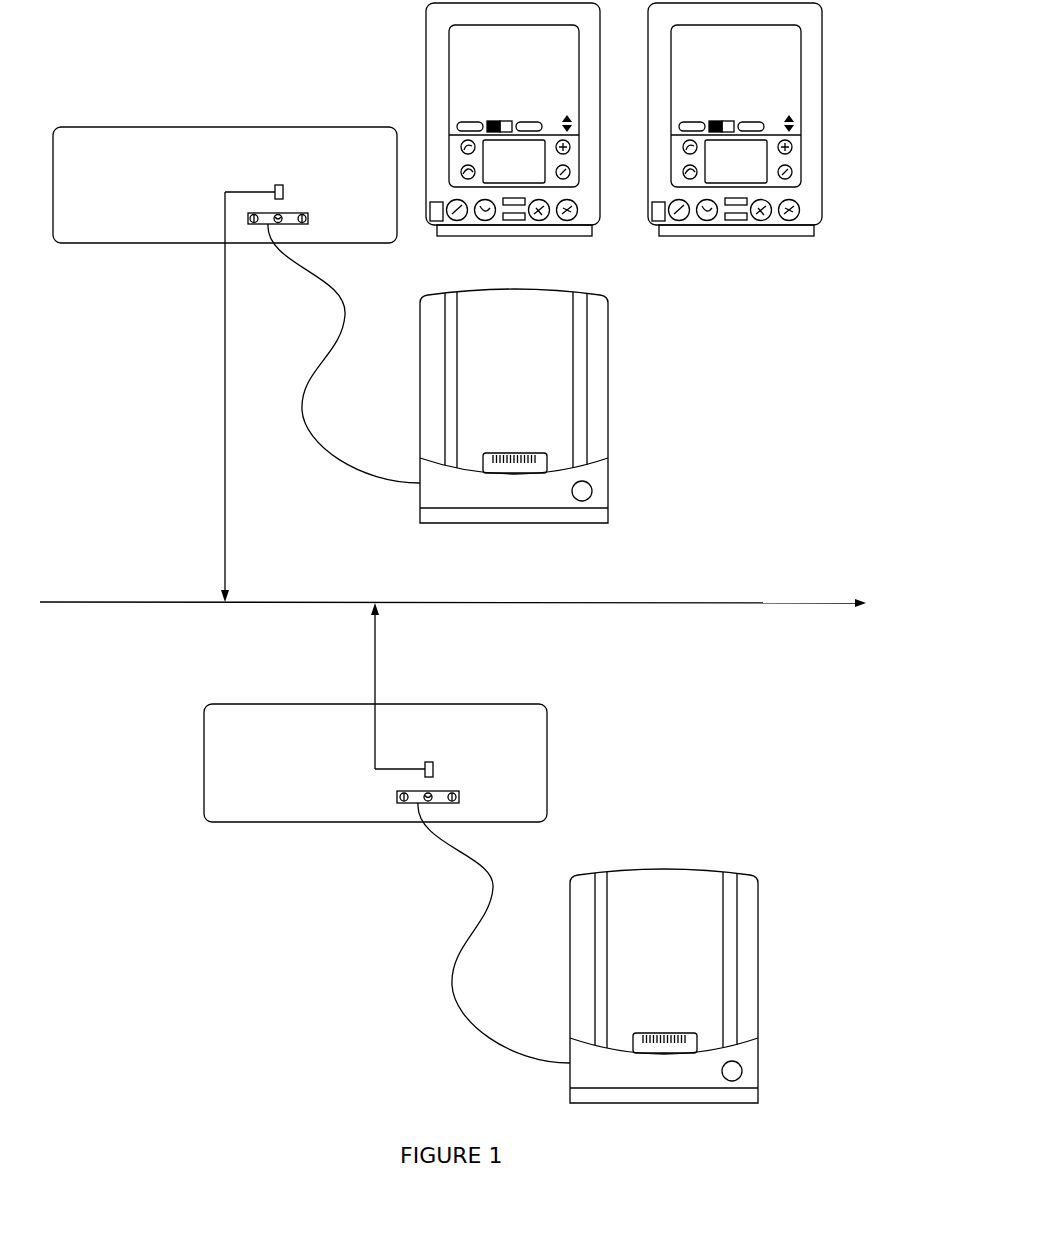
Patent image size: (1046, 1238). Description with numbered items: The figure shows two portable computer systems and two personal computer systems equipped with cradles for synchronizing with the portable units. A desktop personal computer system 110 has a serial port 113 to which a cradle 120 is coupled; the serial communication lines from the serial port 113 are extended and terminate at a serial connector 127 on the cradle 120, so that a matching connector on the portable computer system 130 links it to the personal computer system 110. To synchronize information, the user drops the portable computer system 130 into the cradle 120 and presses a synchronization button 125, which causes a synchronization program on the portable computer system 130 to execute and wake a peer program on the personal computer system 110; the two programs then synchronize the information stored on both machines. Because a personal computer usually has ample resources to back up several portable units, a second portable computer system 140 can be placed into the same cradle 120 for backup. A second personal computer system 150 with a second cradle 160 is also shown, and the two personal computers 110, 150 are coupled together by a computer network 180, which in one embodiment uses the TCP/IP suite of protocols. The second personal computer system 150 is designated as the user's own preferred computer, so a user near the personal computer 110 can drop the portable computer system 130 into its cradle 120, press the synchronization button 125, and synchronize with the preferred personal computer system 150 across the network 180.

The desktop personal computer system 110 is at (150, 243).
The serial port 113 is at (292, 212).
The cradle 120 is at (565, 406).
The synchronization button 125 is at (592, 487).
The serial connector 127 is at (510, 453).
The portable computer system 130 is at (426, 50).
The second portable computer system 140 is at (823, 47).
The second personal computer system 150 is at (300, 822).
The second cradle 160 is at (658, 865).
The computer network 180 is at (678, 603).